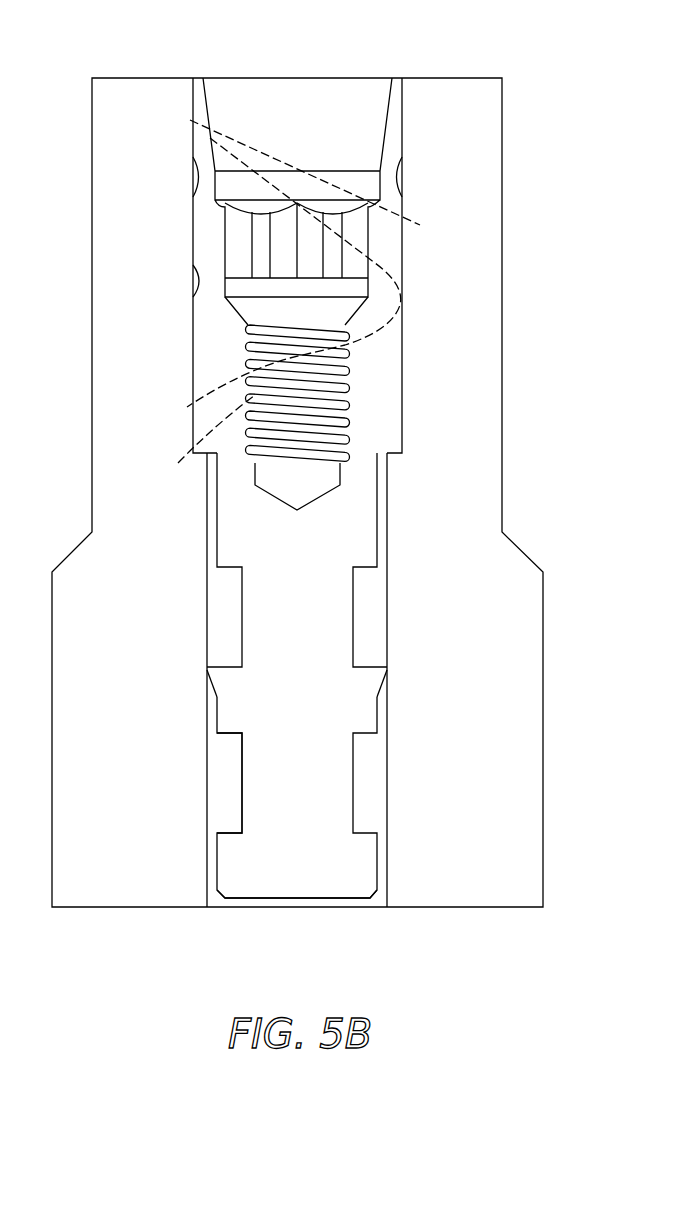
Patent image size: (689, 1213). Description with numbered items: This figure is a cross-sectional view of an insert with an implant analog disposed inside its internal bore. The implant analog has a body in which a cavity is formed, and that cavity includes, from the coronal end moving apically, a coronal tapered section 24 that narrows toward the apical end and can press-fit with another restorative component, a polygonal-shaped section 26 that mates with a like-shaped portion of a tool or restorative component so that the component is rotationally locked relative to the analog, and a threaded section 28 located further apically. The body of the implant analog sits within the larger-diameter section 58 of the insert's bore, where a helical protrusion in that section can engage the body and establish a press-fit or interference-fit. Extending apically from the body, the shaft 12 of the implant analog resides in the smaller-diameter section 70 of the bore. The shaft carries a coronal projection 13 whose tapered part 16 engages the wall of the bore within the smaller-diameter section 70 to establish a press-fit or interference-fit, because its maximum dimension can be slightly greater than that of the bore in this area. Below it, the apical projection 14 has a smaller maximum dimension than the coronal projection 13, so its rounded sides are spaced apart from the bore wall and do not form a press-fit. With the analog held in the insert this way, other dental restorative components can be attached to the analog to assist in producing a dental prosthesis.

The shaft 12 is at (335, 797).
The coronal projection 13 is at (217, 711).
The apical projection 14 is at (377, 862).
The tapered part 16 is at (388, 672).
The tapered section 24 is at (385, 102).
The polygonal-shaped section 26 is at (240, 243).
The threaded section 28 is at (255, 447).
The larger-diameter section 58 is at (193, 267).
The smaller-diameter section 70 is at (216, 757).